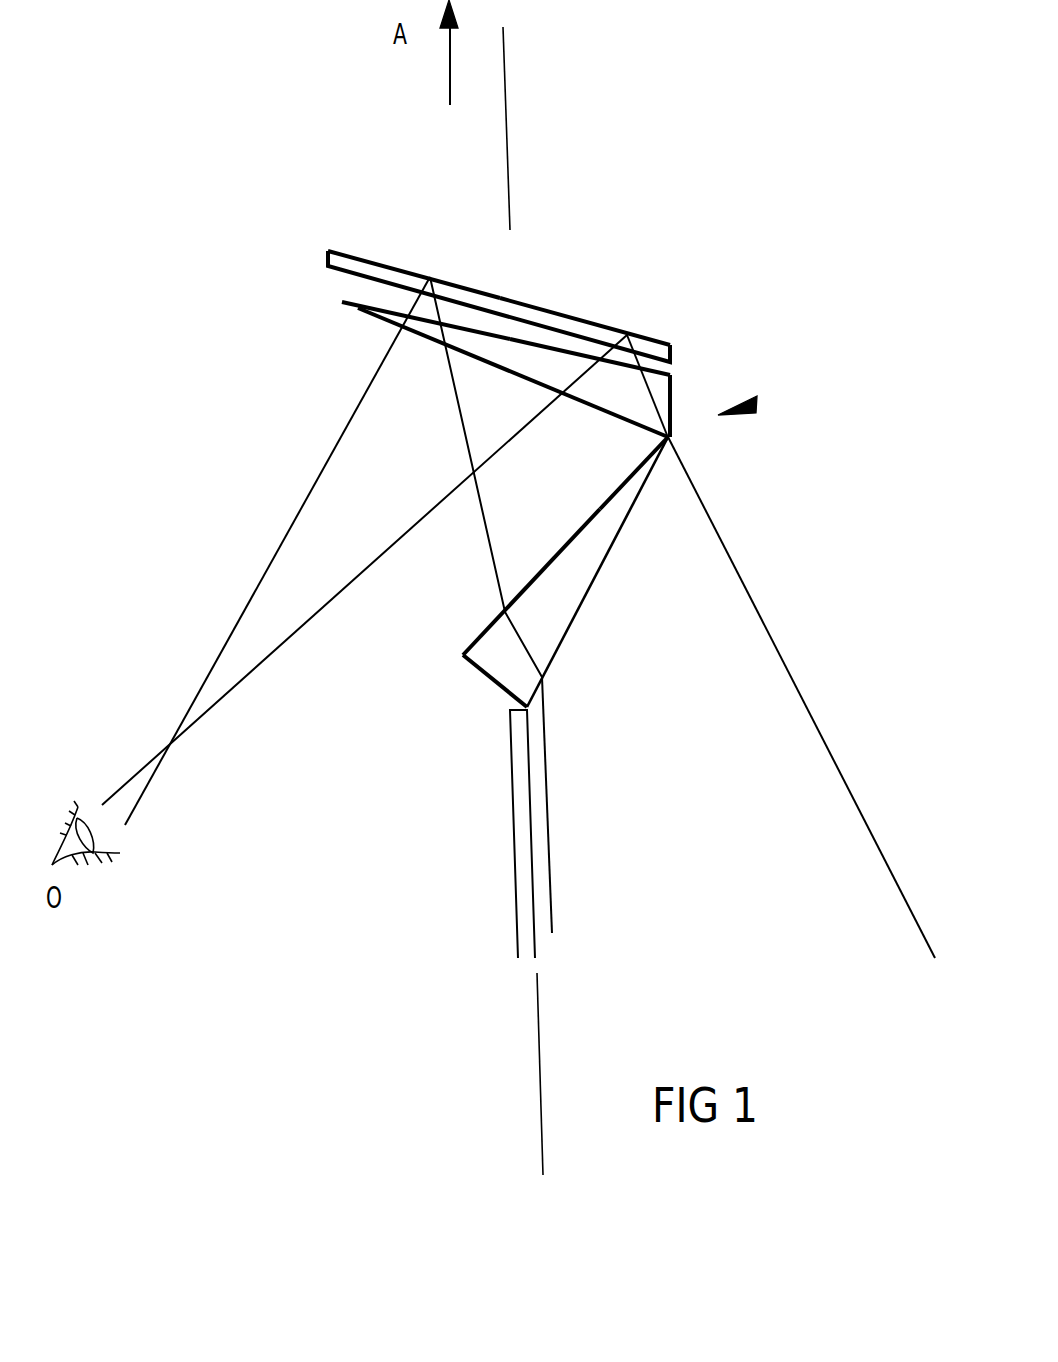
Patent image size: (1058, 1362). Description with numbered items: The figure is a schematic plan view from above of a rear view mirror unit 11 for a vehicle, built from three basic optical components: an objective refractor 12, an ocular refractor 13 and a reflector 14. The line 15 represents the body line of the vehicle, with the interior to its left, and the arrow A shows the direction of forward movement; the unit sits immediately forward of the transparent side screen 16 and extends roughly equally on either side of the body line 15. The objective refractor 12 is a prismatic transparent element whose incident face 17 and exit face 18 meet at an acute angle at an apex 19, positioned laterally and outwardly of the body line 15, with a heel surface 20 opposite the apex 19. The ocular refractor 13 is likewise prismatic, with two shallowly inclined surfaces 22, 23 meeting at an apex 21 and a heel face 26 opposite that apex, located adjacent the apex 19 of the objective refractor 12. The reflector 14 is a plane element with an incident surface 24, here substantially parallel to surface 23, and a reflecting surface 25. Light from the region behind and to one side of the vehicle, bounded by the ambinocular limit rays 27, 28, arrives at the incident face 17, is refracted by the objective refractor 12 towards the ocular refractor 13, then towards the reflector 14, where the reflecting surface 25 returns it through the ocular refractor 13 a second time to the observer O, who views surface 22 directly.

The mirror unit 11 is at (757, 404).
The objective refractor 12 is at (564, 587).
The ocular refractor 13 is at (395, 320).
The reflector 14 is at (517, 308).
The body line 15 is at (506, 100).
The transparent side screen 16 is at (532, 817).
The incident face 17 is at (613, 545).
The exit face 18 is at (500, 613).
The apex 19 is at (645, 458).
The heel surface 20 is at (483, 675).
The apex 21 is at (342, 302).
The surface 22 is at (463, 368).
The surface 23 is at (583, 352).
The incident surface 24 is at (343, 273).
The reflecting surface 25 is at (463, 285).
The heel face 26 is at (672, 393).
The ambinocular limit ray 27 is at (547, 752).
The ambinocular limit ray 28 is at (842, 773).